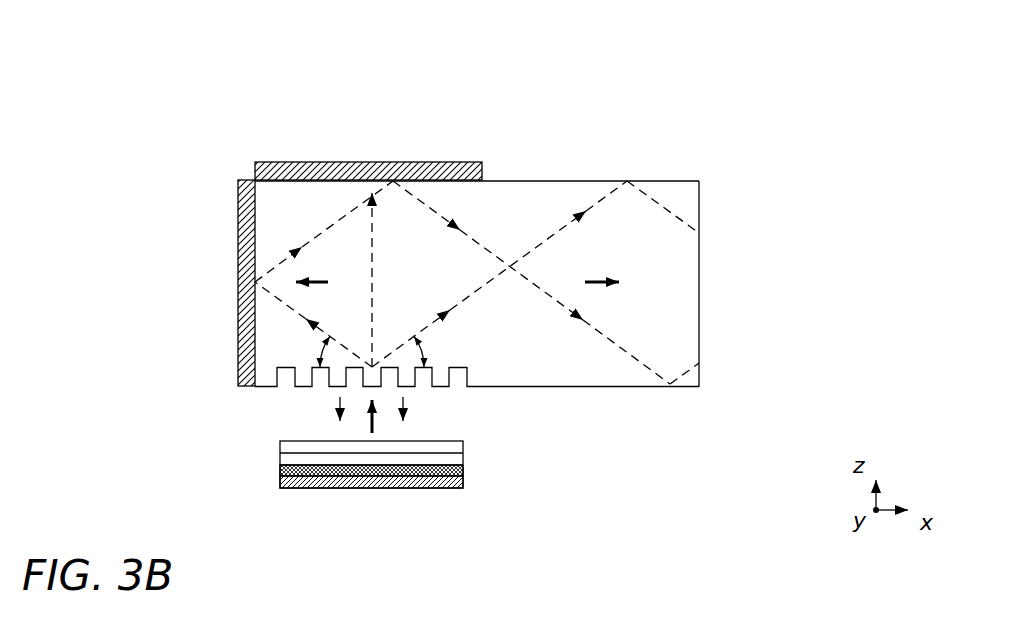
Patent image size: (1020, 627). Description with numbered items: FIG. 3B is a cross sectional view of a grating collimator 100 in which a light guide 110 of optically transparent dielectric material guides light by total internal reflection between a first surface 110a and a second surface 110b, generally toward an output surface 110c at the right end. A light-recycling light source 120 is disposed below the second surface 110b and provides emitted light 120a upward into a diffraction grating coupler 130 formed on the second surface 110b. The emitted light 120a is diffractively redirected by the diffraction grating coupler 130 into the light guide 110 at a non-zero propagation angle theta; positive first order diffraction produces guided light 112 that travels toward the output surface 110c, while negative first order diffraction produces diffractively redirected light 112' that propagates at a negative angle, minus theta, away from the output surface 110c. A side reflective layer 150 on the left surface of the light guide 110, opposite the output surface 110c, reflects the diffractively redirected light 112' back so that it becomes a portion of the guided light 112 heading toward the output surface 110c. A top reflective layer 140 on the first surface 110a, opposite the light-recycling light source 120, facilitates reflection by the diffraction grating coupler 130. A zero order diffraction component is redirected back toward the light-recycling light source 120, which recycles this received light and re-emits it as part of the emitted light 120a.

The grating collimator 100 is at (246, 65).
The light guide 110 is at (540, 181).
The first surface 110a is at (698, 181).
The second surface 110b is at (687, 386).
The output surface 110c is at (699, 282).
The guided light 112 is at (569, 216).
The diffractively redirected light 112' is at (397, 226).
The light-recycling light source 120 is at (280, 462).
The emitted light 120a is at (299, 418).
The diffraction grating coupler 130 is at (460, 391).
The top reflective layer 140 is at (372, 163).
The side reflective layer 150 is at (247, 168).